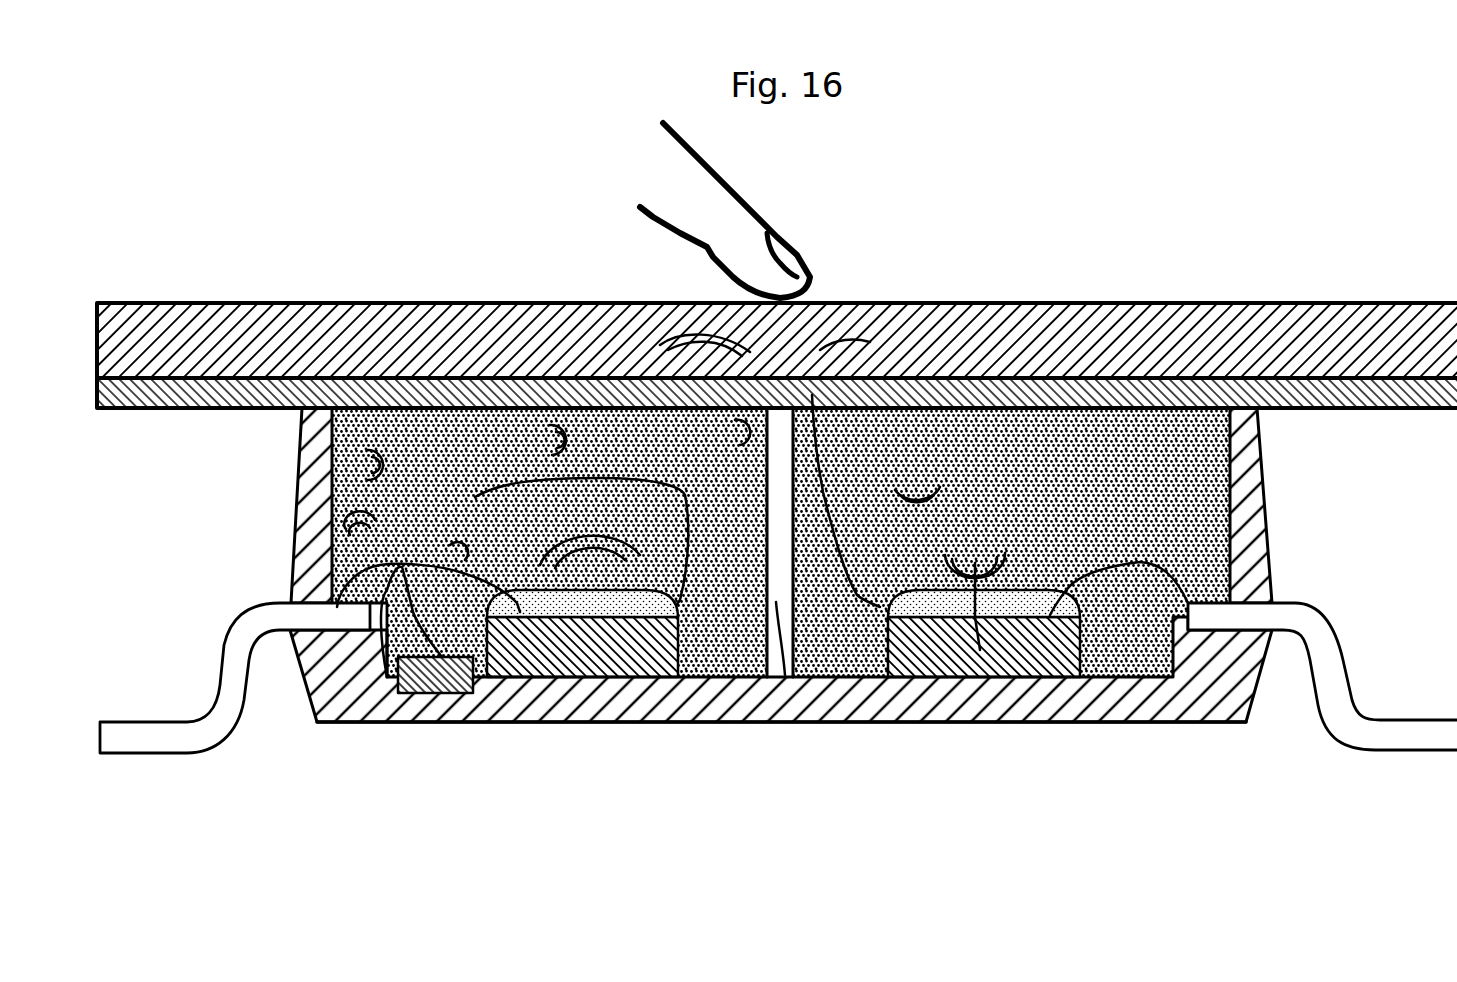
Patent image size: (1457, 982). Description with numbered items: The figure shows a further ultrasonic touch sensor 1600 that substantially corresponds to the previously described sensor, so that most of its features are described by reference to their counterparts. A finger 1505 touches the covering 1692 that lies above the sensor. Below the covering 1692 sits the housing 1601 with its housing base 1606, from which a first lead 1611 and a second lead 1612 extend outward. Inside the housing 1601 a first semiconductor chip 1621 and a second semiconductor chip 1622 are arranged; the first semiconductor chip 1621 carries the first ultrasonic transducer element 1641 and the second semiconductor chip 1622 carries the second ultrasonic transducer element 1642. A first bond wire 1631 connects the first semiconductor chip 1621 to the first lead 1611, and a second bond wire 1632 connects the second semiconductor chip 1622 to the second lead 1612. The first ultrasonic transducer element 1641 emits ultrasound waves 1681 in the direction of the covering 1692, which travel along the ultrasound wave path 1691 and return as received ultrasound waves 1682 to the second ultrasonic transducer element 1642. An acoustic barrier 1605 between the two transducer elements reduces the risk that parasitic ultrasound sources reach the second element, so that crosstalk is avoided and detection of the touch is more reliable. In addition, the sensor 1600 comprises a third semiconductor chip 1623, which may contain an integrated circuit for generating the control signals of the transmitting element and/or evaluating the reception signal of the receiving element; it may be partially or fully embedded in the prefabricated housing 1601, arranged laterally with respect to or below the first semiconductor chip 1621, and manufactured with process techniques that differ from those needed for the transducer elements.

The finger 1505 is at (677, 197).
The ultrasonic touch sensor 1600 is at (774, 634).
The housing 1601 is at (762, 695).
The acoustic barrier 1605 is at (735, 660).
The housing base 1606 is at (822, 705).
The first lead 1611 is at (117, 737).
The second lead 1612 is at (1420, 737).
The first semiconductor chip 1621 is at (607, 607).
The second semiconductor chip 1622 is at (1022, 678).
The third semiconductor chip 1623 is at (420, 713).
The first bond wire 1631 is at (303, 690).
The second bond wire 1632 is at (1140, 567).
The first ultrasonic transducer element 1641 is at (575, 682).
The second ultrasonic transducer element 1642 is at (1063, 663).
The ultrasound waves 1681 is at (673, 612).
The received ultrasound waves 1682 is at (1008, 607).
The ultrasound wave path 1691 is at (880, 607).
The covering 1692 is at (1340, 333).